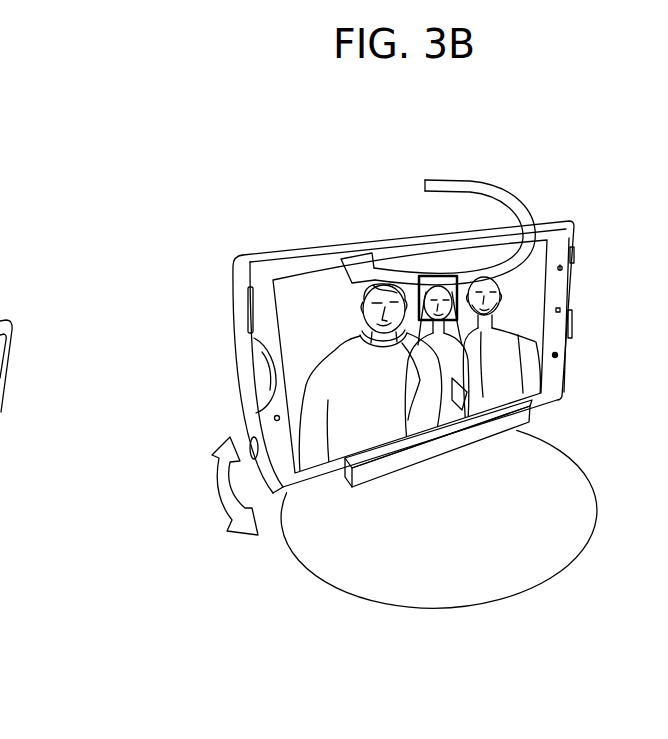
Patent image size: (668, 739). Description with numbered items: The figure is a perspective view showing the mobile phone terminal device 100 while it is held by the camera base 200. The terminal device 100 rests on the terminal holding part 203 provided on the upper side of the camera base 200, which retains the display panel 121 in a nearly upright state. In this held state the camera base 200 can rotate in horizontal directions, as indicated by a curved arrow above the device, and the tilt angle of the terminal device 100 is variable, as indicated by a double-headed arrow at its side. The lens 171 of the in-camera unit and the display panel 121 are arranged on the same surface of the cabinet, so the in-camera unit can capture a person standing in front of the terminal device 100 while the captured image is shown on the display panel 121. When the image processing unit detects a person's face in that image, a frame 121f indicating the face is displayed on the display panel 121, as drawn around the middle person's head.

The mobile phone terminal device 100 is at (534, 222).
The display panel 121 is at (284, 264).
The frame 121f is at (470, 305).
The lens 171 is at (274, 418).
The camera base 200 is at (548, 578).
The terminal holding part 203 is at (533, 413).